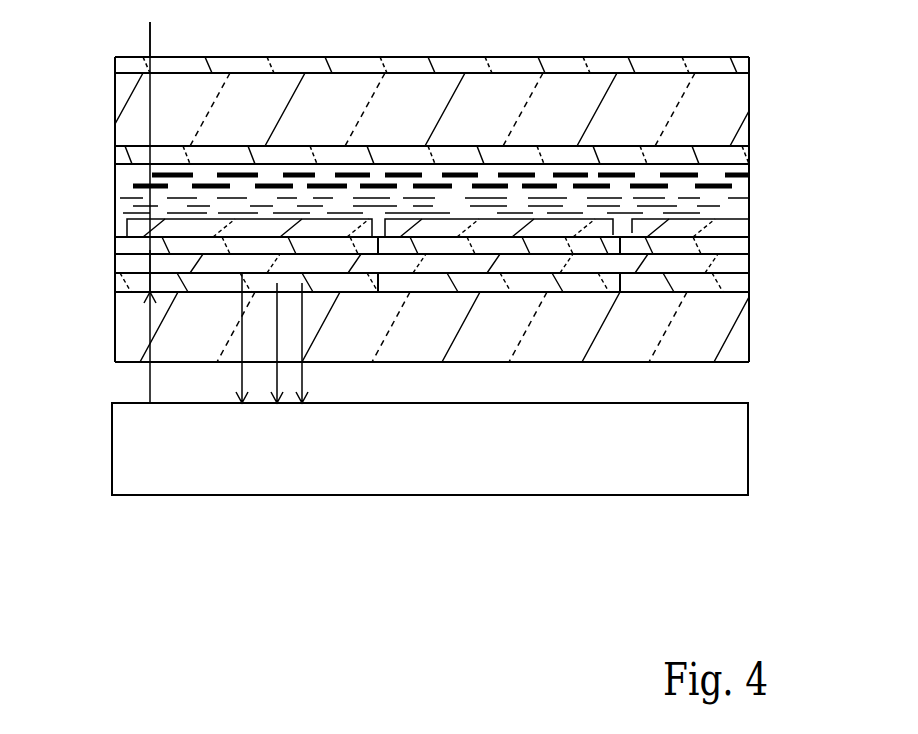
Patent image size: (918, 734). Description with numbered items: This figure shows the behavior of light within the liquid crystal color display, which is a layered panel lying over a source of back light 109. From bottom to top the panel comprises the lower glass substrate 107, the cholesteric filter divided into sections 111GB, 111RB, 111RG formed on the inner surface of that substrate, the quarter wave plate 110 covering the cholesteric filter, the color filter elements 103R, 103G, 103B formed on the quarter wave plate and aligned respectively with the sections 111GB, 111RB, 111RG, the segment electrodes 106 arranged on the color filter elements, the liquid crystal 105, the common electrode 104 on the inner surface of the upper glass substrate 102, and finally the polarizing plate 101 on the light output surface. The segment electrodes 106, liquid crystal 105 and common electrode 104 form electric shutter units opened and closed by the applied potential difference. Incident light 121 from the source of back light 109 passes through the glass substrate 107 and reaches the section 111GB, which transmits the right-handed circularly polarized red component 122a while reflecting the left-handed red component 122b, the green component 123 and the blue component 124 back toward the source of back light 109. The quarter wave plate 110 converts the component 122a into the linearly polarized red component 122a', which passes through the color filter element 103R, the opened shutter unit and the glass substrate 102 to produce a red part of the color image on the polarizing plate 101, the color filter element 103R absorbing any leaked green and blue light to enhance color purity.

The polarizing plate 101 is at (749, 57).
The glass substrate 102 is at (749, 100).
The common electrode 104 is at (749, 154).
The liquid crystal 105 is at (749, 195).
The segment electrodes 106 is at (749, 225).
The color filter element 103R is at (165, 243).
The color filter element 103G is at (455, 243).
The color filter element 103B is at (749, 247).
The quarter wave plate 110 is at (749, 262).
The cholesteric filter section 111GB is at (335, 290).
The cholesteric filter section 111RB is at (600, 290).
The cholesteric filter section 111RG is at (749, 278).
The glass substrate 107 is at (749, 330).
The source of back light 109 is at (748, 457).
The incident light 121 is at (148, 320).
The right-handed circularly polarized light component recognized as red 122a is at (98, 271).
The linearly polarized light component recognized as red 122a' is at (94, 39).
The left-handed circularly polarized light component recognized as red 122b is at (243, 403).
The light component recognized as green 123 is at (277, 403).
The light component recognized as blue 124 is at (302, 403).